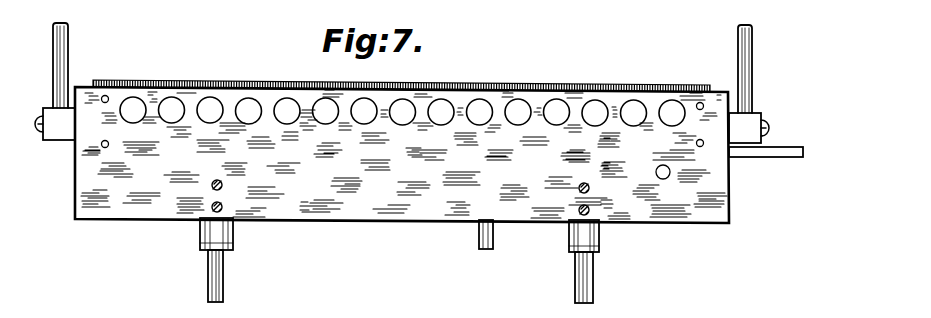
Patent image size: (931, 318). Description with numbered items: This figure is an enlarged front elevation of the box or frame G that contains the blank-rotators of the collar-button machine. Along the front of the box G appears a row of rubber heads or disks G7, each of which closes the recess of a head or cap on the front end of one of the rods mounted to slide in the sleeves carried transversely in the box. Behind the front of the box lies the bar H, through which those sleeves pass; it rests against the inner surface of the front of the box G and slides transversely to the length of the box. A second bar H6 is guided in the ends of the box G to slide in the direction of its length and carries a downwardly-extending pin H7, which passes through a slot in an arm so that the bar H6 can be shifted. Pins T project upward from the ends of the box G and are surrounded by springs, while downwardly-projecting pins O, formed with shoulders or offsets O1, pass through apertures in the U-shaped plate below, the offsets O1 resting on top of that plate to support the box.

The box or frame G is at (402, 155).
The rubber head or disk G7 is at (402, 111).
The bar H is at (401, 75).
The bar H6 is at (766, 140).
The downwardly-extending pin H7 is at (495, 237).
The pins T is at (62, 58).
The shoulders or offsets O1 is at (233, 243).
The downwardly-projecting pins O is at (228, 277).